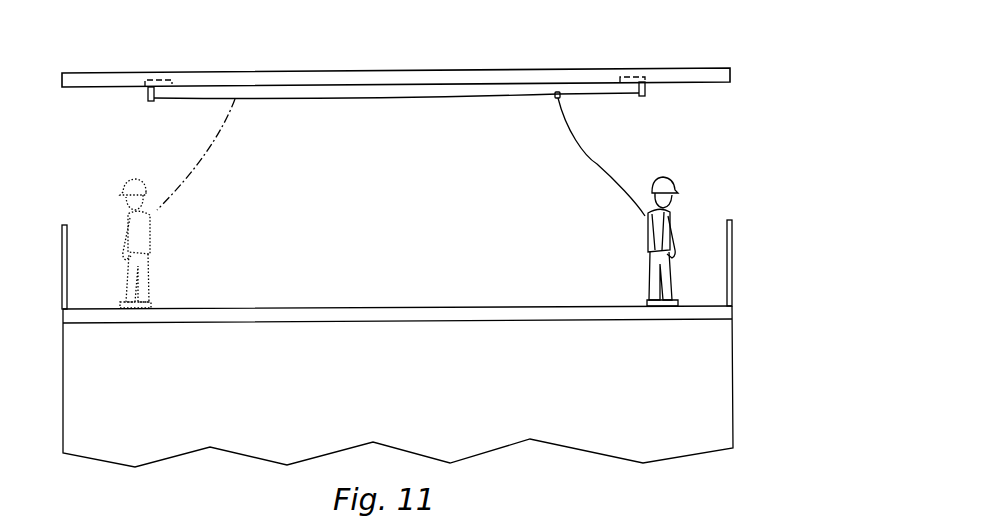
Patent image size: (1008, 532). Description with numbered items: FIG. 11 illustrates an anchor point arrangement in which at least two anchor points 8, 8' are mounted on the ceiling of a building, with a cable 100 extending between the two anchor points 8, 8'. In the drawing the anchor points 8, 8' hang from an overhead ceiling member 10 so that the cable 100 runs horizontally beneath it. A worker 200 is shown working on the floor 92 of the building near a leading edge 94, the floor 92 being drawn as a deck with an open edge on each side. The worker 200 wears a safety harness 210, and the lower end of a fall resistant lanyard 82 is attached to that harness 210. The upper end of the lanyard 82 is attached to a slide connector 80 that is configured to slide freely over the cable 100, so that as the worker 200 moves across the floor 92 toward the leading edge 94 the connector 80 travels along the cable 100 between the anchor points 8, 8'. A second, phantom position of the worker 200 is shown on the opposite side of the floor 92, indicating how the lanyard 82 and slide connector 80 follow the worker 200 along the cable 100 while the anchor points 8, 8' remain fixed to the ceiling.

The beam 10 is at (622, 66).
The anchor point 8 is at (668, 106).
The anchor point 8' is at (125, 109).
The slide connector 80 is at (554, 97).
The fall resistant lanyard 82 is at (593, 164).
The cable 100 is at (138, 141).
The worker 200 is at (672, 184).
The safety harness 210 is at (646, 228).
The floor 92 is at (733, 312).
The leading edge 94 is at (63, 312).